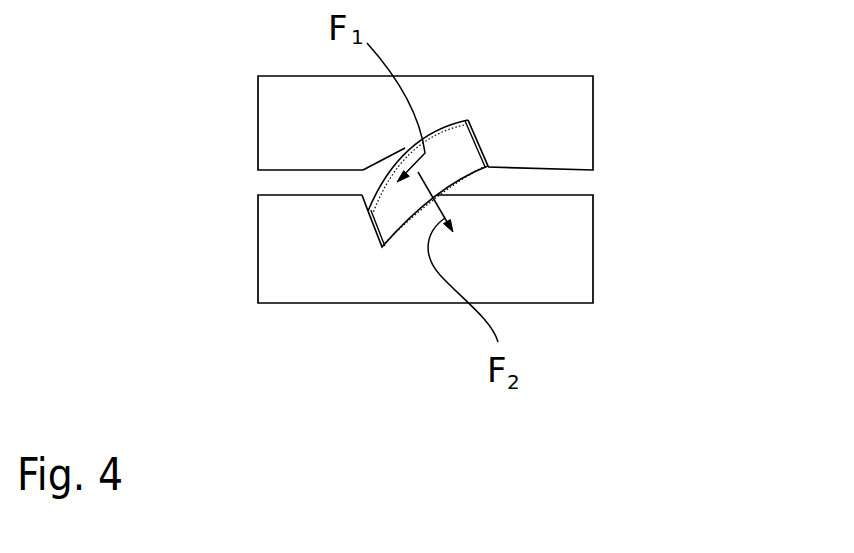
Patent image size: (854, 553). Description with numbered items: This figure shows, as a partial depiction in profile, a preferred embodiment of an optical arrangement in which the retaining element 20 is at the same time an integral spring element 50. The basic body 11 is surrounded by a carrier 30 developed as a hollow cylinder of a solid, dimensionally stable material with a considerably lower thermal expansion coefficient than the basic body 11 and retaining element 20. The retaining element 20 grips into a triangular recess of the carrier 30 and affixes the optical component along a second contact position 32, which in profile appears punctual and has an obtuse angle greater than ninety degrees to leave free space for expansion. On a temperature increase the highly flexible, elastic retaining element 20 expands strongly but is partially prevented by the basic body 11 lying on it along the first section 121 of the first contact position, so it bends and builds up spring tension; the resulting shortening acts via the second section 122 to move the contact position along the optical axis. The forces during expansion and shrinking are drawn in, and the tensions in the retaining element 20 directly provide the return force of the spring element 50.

The basic body 11 is at (558, 128).
The carrier 30 is at (442, 250).
The second contact position 32 is at (368, 223).
The retaining element 20 is at (555, 127).
The spring element 50 is at (428, 168).
The first section of the first contact position 121 is at (482, 133).
The second section of the first contact position 122 is at (458, 124).